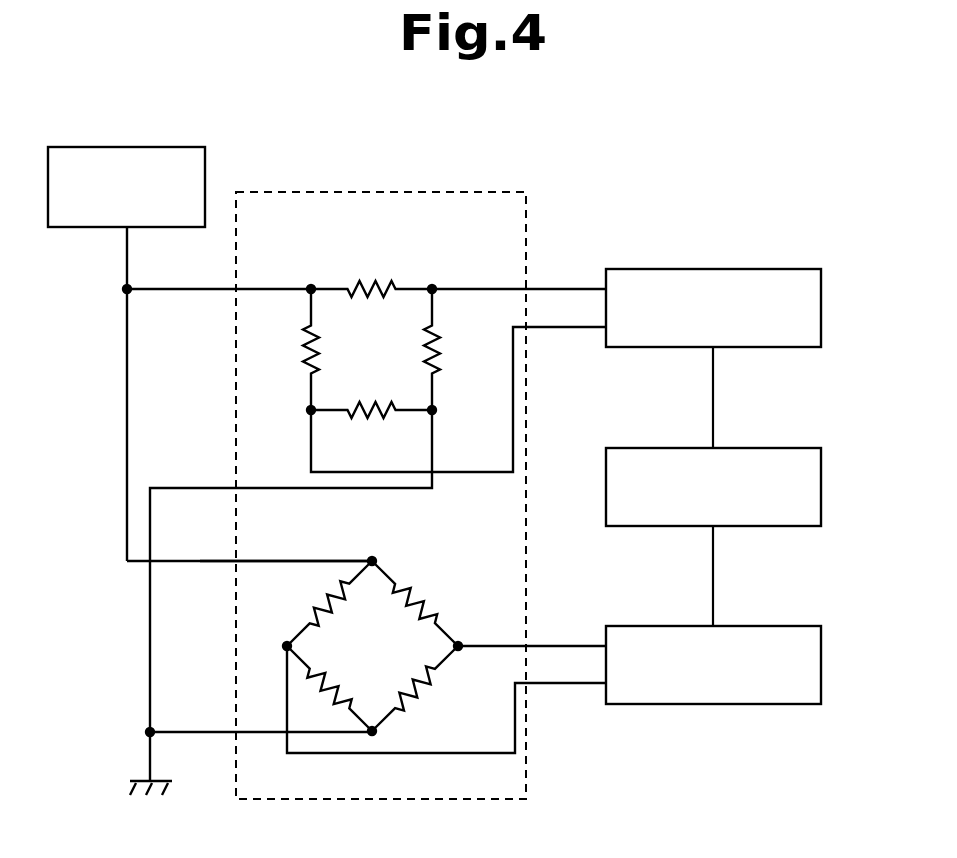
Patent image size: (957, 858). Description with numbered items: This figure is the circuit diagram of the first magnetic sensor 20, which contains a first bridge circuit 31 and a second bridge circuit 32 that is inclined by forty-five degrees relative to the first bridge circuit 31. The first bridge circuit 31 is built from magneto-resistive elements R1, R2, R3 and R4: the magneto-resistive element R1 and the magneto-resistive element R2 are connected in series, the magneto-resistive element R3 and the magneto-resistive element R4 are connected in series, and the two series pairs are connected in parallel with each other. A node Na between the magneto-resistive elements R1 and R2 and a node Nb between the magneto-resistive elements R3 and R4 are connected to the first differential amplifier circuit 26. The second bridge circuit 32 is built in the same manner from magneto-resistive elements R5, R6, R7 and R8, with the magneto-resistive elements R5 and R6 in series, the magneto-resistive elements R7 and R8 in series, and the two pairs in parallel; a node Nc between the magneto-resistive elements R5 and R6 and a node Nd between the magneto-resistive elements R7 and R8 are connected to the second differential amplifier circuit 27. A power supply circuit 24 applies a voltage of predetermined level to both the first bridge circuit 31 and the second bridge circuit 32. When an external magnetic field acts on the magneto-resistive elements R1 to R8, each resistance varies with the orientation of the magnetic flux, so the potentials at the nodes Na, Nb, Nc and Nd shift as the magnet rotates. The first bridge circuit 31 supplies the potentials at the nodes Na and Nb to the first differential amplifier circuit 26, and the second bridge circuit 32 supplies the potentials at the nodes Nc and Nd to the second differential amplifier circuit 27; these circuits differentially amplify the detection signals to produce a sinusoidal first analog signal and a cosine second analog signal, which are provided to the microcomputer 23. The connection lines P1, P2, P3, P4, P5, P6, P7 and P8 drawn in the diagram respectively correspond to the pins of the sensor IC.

The first magnetic sensor 20 is at (449, 192).
The power supply circuit 24 is at (176, 147).
The first differential amplifier circuit 26 is at (790, 268).
The second differential amplifier circuit 27 is at (790, 625).
The microcomputer 23 is at (790, 447).
The first bridge circuit 31 is at (371, 351).
The second bridge circuit 32 is at (348, 677).
The magneto-resistive element R1 is at (440, 344).
The magneto-resistive element R2 is at (376, 285).
The magneto-resistive element R3 is at (304, 347).
The magneto-resistive element R4 is at (378, 415).
The magneto-resistive element R5 is at (432, 685).
The magneto-resistive element R6 is at (424, 605).
The magneto-resistive element R7 is at (318, 603).
The magneto-resistive element R8 is at (330, 700).
The connection line P1 is at (568, 287).
The connection line P2 is at (570, 644).
The connection line P3 is at (204, 730).
The connection line P4 is at (204, 486).
The connection line P5 is at (568, 329).
The connection line P6 is at (568, 686).
The connection line P7 is at (200, 563).
The connection line P8 is at (190, 287).
The node Na is at (433, 286).
The node Nb is at (308, 410).
The node Nc is at (462, 643).
The node Nd is at (285, 646).